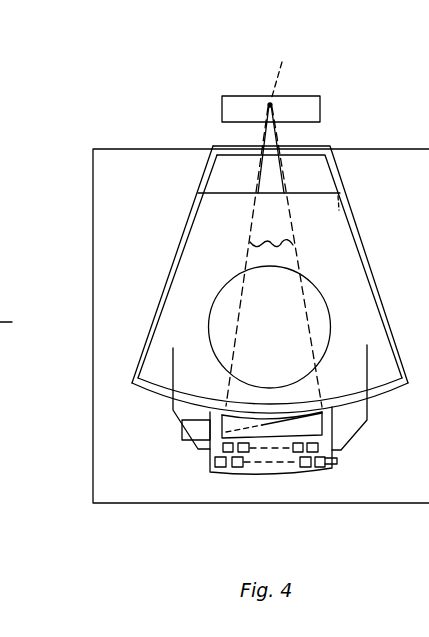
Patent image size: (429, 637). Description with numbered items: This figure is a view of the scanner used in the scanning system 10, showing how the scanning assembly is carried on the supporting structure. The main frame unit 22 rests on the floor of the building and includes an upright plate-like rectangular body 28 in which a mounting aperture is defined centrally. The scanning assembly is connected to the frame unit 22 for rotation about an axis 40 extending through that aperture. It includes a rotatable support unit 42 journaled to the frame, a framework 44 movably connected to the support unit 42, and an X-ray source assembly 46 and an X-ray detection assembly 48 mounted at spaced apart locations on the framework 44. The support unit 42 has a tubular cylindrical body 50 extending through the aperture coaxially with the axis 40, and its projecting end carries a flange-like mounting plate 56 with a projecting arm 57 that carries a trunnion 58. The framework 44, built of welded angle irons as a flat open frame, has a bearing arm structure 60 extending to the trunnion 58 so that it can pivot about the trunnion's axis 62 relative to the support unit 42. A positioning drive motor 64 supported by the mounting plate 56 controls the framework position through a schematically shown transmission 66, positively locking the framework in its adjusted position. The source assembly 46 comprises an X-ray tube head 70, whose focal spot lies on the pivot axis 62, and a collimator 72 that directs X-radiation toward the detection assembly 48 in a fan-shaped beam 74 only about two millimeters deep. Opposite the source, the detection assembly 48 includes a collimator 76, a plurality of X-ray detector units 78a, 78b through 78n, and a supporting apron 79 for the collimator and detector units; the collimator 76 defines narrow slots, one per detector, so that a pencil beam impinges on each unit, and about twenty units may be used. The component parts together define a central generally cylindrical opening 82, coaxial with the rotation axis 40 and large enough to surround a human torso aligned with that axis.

The scanning system 10 is at (240, 74).
The main frame unit 22 is at (117, 144).
The upright plate-like rectangular body 28 is at (117, 228).
The axis 40 is at (272, 324).
The rotatable support unit 42 is at (168, 277).
The framework 44 is at (368, 216).
The X-ray source assembly 46 is at (322, 91).
The X-ray detection assembly 48 is at (213, 478).
The tubular cylindrical body 50 is at (315, 291).
The mounting plate 56 is at (320, 242).
The projecting arm 57 is at (278, 180).
The trunnion 58 is at (287, 56).
The bearing arm structure 60 is at (260, 128).
The pivot axis 62 is at (282, 106).
The positioning drive motor 64 is at (190, 433).
The transmission 66 is at (254, 420).
The X-ray tube head 70 is at (228, 95).
The collimator 72 is at (283, 141).
The fan-shaped beam 74 is at (250, 250).
The collimator 76 is at (272, 426).
The X-ray detector unit 78a is at (333, 463).
The X-ray detector unit 78b is at (318, 466).
The X-ray detector unit 78n is at (251, 456).
The supporting apron 79 is at (338, 460).
The central cylindrical opening 82 is at (274, 361).